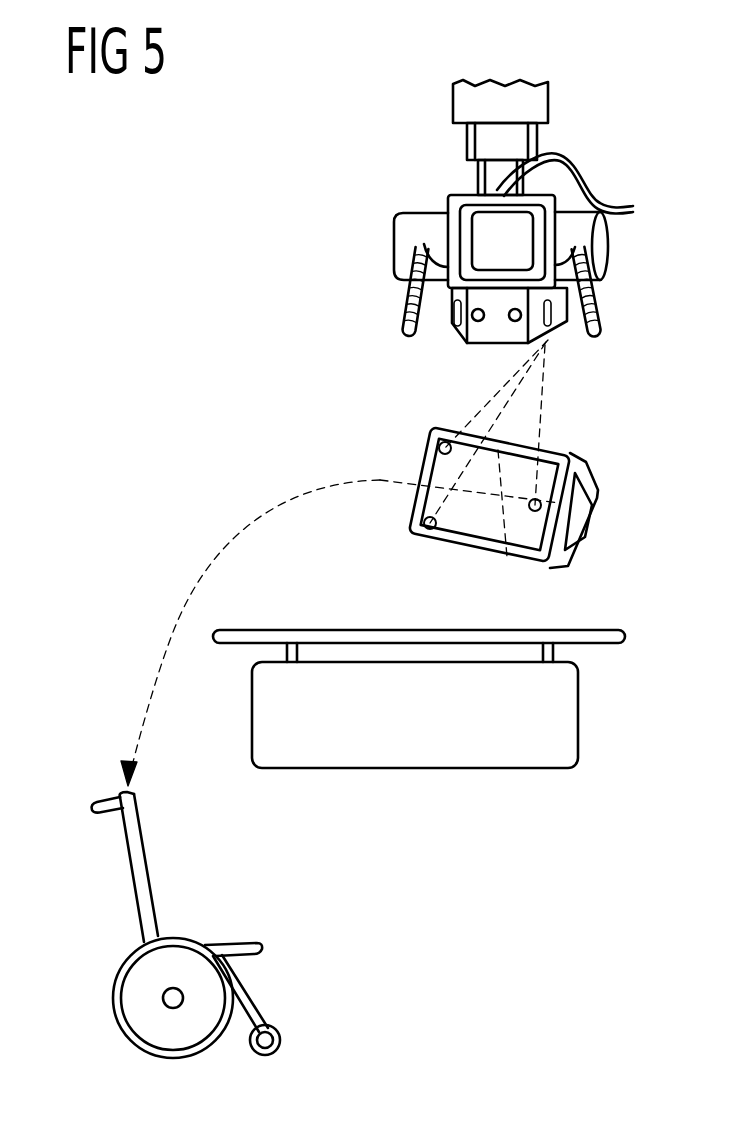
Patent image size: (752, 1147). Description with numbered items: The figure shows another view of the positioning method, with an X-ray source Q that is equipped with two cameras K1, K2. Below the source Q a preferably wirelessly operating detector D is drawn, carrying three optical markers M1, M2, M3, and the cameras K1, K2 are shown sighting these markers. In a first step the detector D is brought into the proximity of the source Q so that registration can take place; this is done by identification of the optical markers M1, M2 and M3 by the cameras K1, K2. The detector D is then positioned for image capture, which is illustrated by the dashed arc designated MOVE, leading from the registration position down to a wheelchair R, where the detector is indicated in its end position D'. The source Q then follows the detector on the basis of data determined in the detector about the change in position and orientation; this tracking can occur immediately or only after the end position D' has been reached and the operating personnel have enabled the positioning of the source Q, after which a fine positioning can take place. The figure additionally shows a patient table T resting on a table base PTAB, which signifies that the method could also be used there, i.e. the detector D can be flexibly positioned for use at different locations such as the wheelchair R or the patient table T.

The source Q is at (605, 250).
The camera K1 is at (548, 335).
The camera K2 is at (453, 330).
The marker M1 is at (438, 428).
The marker M2 is at (424, 542).
The marker M3 is at (541, 505).
The detector D is at (489, 528).
The line MOVE is at (263, 528).
The patient table T is at (322, 628).
The patient table PTAB is at (495, 768).
The detector end position D' is at (112, 867).
The wheelchair R is at (133, 921).